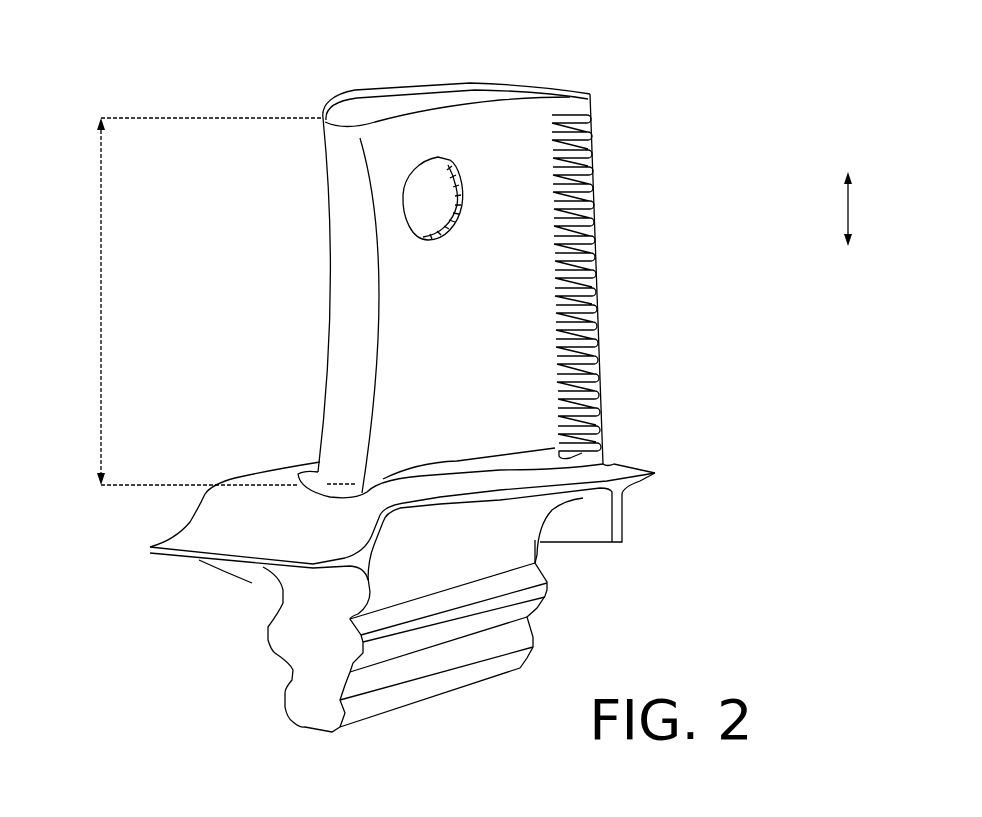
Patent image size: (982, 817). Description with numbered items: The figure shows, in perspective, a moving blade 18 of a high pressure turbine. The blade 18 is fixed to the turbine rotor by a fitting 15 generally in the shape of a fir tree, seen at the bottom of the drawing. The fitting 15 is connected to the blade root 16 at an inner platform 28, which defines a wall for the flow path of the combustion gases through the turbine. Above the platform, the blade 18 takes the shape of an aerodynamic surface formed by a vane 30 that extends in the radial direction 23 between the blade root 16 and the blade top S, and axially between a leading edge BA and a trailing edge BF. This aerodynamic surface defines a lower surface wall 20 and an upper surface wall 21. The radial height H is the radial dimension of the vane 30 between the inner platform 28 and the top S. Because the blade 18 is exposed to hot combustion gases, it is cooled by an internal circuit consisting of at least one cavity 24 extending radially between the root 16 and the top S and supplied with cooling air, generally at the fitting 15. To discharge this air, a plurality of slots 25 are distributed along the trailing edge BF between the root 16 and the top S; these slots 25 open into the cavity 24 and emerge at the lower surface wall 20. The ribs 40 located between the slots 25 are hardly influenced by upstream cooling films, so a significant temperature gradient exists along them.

The fitting 15 is at (513, 633).
The blade root 16 is at (651, 517).
The moving blade 18 is at (718, 125).
The lower surface wall 20 is at (382, 135).
The upper surface wall 21 is at (352, 93).
The radial direction 23 is at (847, 210).
The cavity 24 is at (443, 199).
The slots 25 is at (580, 233).
The inner platform 28 is at (265, 497).
The vane 30 is at (485, 136).
The ribs 40 is at (563, 265).
The blade top S is at (592, 97).
The trailing edge BF is at (600, 207).
The leading edge BA is at (327, 340).
The radial height H is at (216, 301).